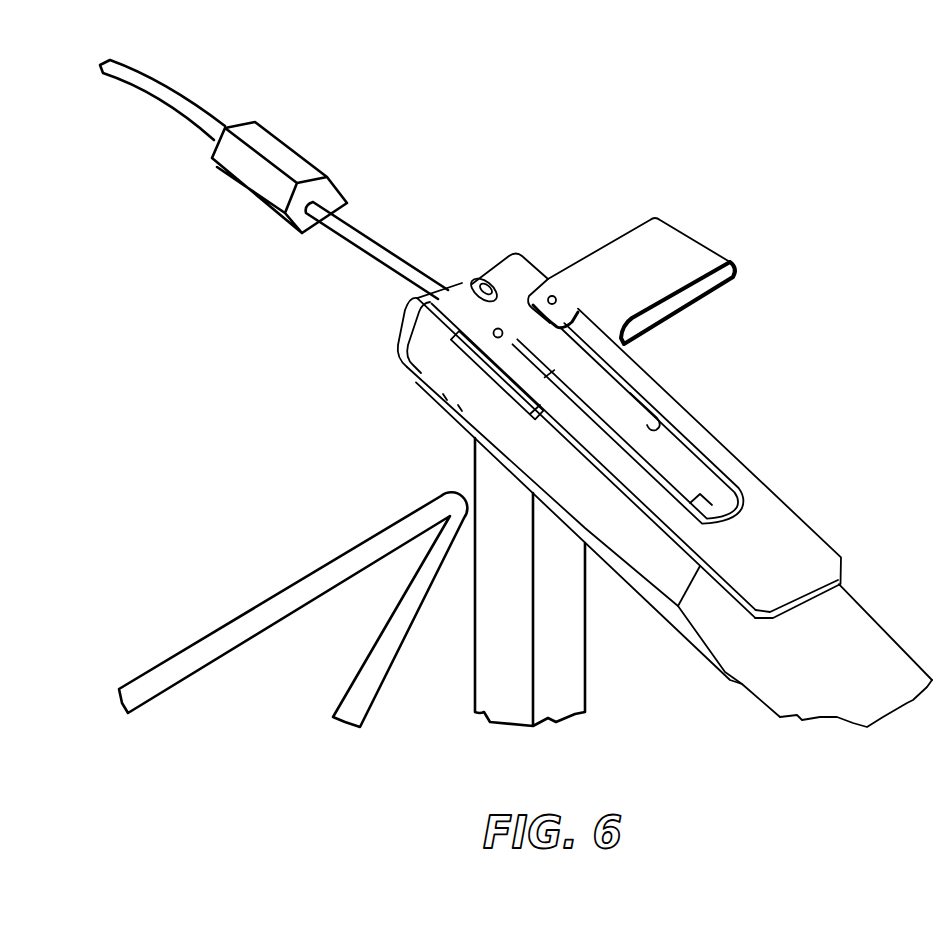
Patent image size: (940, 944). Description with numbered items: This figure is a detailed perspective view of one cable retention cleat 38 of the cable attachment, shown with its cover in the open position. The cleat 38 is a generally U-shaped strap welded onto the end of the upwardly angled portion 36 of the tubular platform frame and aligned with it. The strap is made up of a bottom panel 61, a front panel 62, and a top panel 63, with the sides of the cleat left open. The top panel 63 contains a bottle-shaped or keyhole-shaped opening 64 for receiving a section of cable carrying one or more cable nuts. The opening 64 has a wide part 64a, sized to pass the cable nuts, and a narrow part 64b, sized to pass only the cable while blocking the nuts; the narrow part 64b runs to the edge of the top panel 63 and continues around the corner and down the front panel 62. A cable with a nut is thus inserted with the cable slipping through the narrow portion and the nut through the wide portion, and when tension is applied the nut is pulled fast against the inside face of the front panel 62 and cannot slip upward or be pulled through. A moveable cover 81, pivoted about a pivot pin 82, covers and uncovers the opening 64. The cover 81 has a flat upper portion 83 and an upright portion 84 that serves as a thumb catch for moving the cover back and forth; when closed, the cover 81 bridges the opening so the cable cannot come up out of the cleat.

The upwardly angled portion 36 is at (778, 687).
The cable retention cleat 38 is at (842, 552).
The bottom panel 61 is at (597, 508).
The front panel 62 is at (432, 342).
The top panel 63 is at (800, 547).
The bottle-shaped opening 64 is at (689, 486).
The wide part 64a is at (657, 417).
The narrow part 64b is at (480, 278).
The moveable cover 81 is at (693, 238).
The pivot pin 82 is at (556, 296).
The flat upper portion 83 is at (661, 278).
The upright portion 84 is at (695, 287).